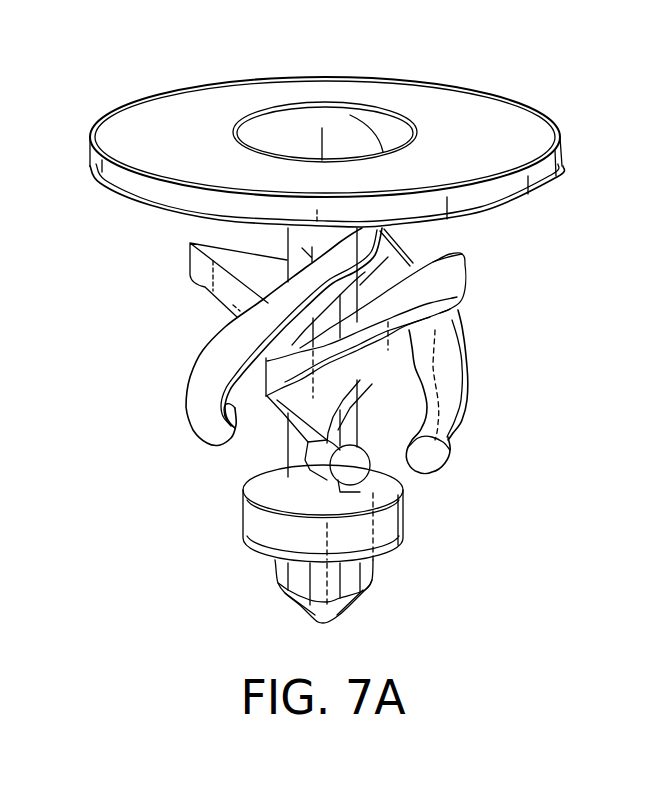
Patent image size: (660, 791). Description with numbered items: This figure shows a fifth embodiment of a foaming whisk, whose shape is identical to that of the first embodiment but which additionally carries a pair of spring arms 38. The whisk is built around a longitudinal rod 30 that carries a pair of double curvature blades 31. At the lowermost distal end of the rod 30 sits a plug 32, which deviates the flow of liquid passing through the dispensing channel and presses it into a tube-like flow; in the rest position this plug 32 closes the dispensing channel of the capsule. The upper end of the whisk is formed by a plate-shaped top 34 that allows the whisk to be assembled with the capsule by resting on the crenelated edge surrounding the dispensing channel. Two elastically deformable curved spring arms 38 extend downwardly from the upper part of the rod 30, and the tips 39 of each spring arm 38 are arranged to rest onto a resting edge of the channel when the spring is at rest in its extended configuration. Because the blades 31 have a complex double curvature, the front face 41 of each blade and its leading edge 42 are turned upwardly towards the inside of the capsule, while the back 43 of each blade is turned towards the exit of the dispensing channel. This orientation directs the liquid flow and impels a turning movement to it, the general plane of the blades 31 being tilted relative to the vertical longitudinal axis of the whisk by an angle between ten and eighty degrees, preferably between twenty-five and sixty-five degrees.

The longitudinal rod 30 is at (298, 240).
The double curvature blades 31 is at (445, 301).
The plug 32 is at (388, 525).
The plate-shaped top 34 is at (493, 120).
The spring arms 38 is at (207, 368).
The tips 39 is at (228, 460).
The front face 41 is at (268, 277).
The leading edge 42 is at (403, 327).
The back 43 is at (266, 397).